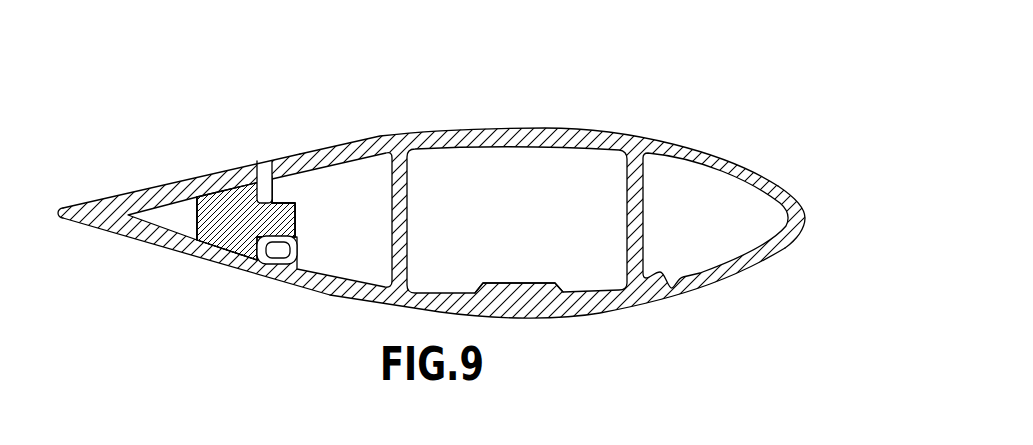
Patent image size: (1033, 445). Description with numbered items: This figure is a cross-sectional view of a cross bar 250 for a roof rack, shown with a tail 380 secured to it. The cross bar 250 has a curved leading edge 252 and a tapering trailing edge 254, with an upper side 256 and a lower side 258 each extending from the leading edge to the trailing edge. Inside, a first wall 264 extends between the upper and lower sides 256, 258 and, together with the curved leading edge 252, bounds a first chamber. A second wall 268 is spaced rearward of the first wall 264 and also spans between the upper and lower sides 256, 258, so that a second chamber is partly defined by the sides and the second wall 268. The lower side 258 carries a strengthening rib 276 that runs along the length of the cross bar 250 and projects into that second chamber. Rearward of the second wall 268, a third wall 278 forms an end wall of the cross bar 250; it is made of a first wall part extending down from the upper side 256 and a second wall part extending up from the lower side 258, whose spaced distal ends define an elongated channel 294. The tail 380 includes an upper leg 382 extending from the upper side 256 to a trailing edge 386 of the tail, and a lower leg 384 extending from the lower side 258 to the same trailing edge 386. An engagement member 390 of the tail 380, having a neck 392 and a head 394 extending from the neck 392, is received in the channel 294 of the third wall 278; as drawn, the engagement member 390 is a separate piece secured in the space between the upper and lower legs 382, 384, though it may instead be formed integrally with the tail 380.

The cross bar 250 is at (720, 108).
The curved leading edge 252 is at (806, 214).
The tapering trailing edge 254 is at (259, 162).
The upper side 256 is at (512, 130).
The lower side 258 is at (558, 316).
The first wall 264 is at (645, 220).
The second wall 268 is at (408, 224).
The strengthening rib 276 is at (524, 283).
The third wall 278 is at (276, 186).
The elongated channel 294 is at (282, 240).
The tail 380 is at (86, 188).
The upper leg 382 is at (168, 184).
The lower leg 384 is at (158, 247).
The trailing edge 386 is at (64, 220).
The engagement member 390 is at (207, 230).
The neck 392 is at (258, 222).
The head 394 is at (290, 221).